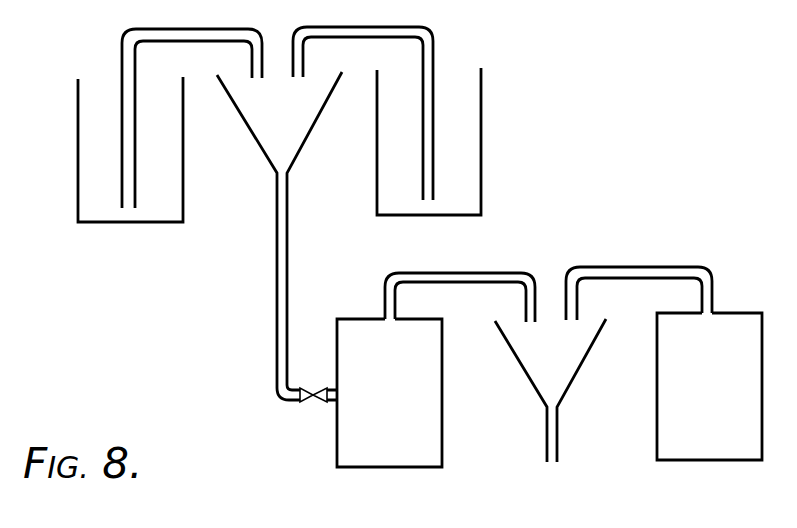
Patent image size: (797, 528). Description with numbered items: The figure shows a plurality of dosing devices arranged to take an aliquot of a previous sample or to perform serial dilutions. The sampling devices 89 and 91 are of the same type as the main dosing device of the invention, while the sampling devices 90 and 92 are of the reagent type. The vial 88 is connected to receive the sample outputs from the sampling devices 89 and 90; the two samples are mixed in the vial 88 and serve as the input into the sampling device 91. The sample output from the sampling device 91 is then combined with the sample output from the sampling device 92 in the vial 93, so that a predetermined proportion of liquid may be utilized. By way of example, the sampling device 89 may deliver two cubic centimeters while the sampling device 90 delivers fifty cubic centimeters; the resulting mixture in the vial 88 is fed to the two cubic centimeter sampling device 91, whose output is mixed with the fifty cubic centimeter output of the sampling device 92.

The vial 88 is at (262, 148).
The sampling device 89 is at (78, 137).
The sampling device 90 is at (481, 135).
The sampling device 91 is at (442, 413).
The sampling device 92 is at (657, 404).
The vial 93 is at (523, 371).